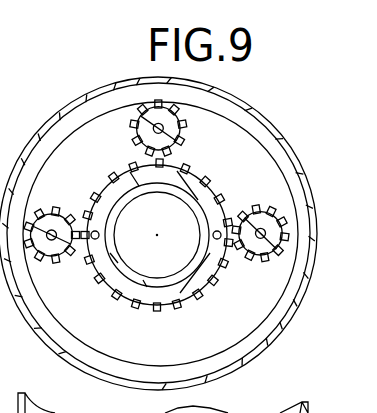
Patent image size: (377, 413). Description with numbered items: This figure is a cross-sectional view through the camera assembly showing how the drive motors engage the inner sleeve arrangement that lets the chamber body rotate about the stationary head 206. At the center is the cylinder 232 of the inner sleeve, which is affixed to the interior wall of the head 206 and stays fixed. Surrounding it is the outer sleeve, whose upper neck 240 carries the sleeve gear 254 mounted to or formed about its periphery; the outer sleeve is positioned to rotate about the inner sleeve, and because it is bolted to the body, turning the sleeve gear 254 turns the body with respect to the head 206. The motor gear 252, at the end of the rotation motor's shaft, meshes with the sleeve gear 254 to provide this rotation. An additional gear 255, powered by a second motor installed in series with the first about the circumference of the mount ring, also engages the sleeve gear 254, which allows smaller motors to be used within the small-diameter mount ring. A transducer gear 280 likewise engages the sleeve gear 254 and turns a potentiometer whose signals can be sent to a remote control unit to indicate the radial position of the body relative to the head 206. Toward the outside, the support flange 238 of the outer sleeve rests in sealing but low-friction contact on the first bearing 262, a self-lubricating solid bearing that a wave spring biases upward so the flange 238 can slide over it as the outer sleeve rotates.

The head 206 is at (306, 118).
The support flange 238 is at (207, 345).
The first bearing 262 is at (279, 312).
The upper neck 240 is at (212, 186).
The sleeve gear 254 is at (259, 189).
The cylinder 232 is at (165, 281).
The gear 255 is at (146, 108).
The motor gear 252 is at (66, 205).
The transducer gear 280 is at (283, 212).